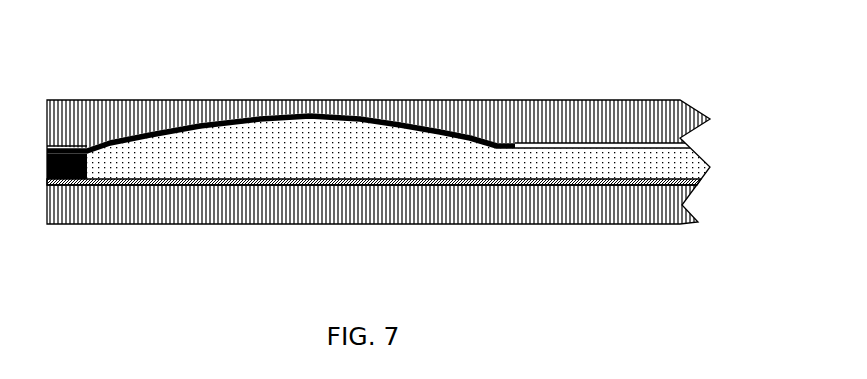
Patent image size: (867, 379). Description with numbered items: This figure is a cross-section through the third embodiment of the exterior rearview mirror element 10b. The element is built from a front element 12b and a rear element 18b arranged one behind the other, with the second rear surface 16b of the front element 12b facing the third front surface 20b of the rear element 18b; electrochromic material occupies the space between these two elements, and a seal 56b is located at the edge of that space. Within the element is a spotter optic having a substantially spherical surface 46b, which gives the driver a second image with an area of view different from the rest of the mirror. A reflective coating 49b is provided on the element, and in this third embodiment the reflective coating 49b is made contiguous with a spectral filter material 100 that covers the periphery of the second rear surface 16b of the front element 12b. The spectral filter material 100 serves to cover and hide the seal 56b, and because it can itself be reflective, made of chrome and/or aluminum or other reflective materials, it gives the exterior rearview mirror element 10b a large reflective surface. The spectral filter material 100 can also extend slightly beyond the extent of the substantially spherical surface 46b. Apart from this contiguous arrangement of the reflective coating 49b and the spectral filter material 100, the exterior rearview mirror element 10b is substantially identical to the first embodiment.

The exterior rearview mirror element 10b is at (490, 97).
The front element 12b is at (146, 92).
The second rear surface 16b is at (608, 135).
The rear element 18b is at (335, 238).
The third front surface 20b is at (486, 188).
The substantially spherical surface 46b is at (314, 105).
The reflective coating 49b is at (156, 147).
The seal 56b is at (81, 193).
The spectral filter material 100 is at (568, 180).